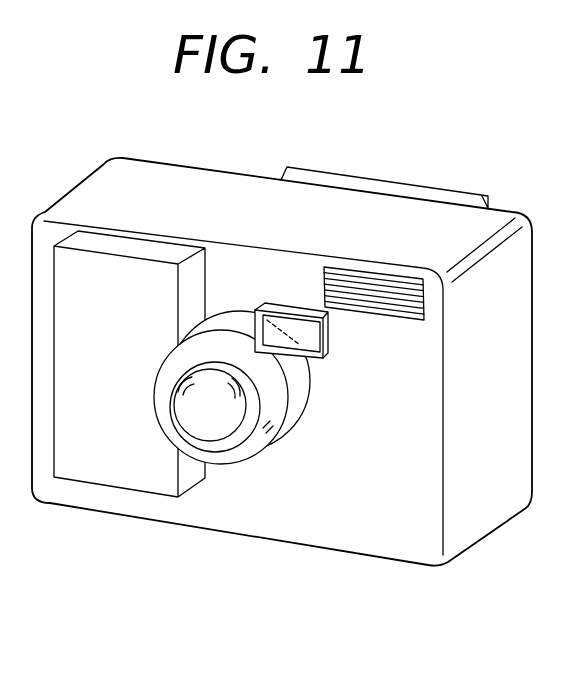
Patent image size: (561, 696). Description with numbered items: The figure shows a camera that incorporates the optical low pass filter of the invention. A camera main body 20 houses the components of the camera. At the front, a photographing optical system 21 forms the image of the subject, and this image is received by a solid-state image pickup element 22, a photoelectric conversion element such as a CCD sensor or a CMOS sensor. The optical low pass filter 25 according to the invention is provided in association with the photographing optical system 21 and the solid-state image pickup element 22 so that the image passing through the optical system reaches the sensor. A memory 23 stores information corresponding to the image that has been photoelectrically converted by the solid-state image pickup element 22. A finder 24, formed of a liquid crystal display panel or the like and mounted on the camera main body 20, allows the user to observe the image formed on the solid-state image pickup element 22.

The camera main body 20 is at (395, 542).
The photographing optical system 21 is at (222, 440).
The solid-state image pickup element 22 is at (328, 335).
The memory 23 is at (92, 463).
The finder 24 is at (417, 190).
The optical low pass filter 25 is at (327, 362).